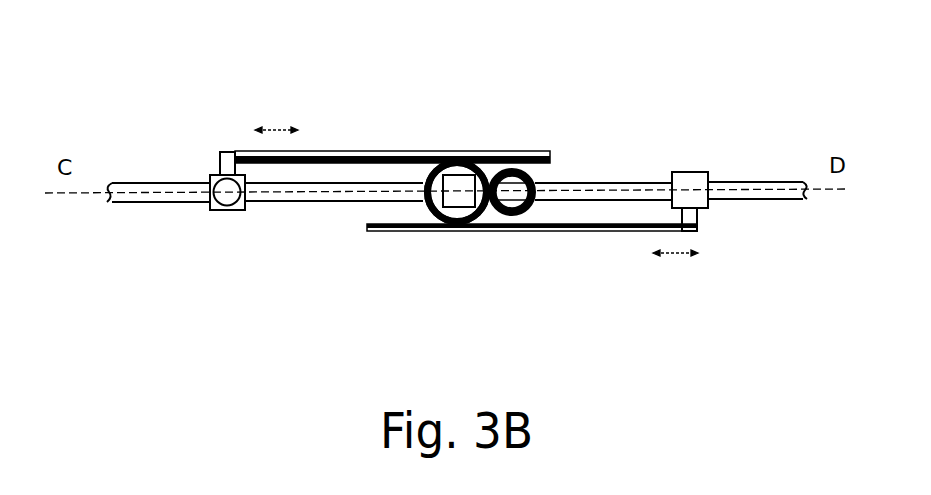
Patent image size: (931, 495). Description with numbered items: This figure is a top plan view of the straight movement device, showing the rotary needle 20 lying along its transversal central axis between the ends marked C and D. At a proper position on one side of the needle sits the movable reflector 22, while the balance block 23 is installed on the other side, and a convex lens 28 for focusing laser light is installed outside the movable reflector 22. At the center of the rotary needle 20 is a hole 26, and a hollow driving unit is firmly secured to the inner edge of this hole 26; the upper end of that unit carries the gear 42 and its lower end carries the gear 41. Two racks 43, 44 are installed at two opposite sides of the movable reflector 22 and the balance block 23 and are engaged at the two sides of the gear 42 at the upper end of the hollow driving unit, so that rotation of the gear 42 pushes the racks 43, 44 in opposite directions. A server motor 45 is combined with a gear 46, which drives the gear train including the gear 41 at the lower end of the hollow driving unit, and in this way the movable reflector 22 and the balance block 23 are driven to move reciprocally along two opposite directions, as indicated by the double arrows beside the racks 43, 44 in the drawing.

The rotary needle 20 is at (172, 202).
The movable reflector 22 is at (240, 151).
The balance block 23 is at (691, 181).
The hole 26 is at (458, 208).
The convex lens 28 is at (226, 200).
The gear 41 is at (437, 200).
The gear 42 is at (438, 162).
The rack 43 is at (578, 232).
The rack 44 is at (358, 152).
The server motor 45 is at (514, 168).
The gear 46 is at (537, 177).